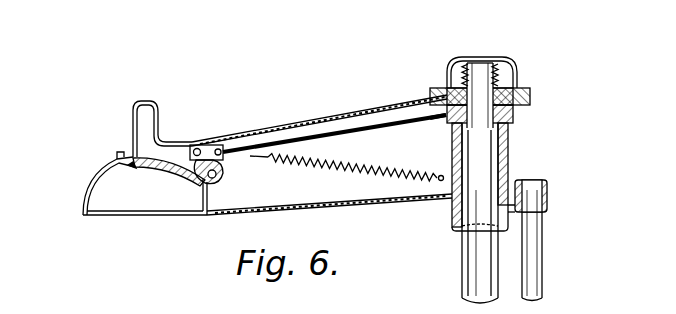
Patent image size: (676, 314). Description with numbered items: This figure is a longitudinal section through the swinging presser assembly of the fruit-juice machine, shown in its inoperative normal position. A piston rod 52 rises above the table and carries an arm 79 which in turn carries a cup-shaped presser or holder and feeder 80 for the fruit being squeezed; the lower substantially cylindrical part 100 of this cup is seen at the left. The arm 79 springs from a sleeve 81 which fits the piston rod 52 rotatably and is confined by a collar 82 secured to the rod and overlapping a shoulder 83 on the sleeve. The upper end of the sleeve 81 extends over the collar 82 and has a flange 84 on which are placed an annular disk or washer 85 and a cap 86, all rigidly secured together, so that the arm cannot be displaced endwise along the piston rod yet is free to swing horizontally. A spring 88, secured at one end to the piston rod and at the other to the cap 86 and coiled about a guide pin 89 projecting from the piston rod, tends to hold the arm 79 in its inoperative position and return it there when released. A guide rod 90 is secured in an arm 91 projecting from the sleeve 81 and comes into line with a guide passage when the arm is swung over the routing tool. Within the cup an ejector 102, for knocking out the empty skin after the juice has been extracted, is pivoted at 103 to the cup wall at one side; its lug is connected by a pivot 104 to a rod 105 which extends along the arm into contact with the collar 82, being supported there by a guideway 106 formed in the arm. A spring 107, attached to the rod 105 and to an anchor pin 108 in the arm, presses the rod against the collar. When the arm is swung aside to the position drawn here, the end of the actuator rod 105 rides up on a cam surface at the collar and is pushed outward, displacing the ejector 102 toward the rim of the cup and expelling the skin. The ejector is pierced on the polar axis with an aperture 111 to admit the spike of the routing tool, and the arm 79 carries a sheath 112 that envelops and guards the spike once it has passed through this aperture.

The piston rod 52 is at (480, 268).
The arm 79 is at (306, 120).
The cup-shaped presser or holder and feeder 80 is at (92, 178).
The sleeve 81 is at (455, 212).
The collar 82 is at (518, 119).
The shoulder 83 is at (452, 138).
The flange 84 is at (530, 104).
The annular disk or washer 85 is at (523, 96).
The cap 86 is at (514, 72).
The spring 88 is at (499, 62).
The guide pin 89 is at (477, 66).
The guide rod 90 is at (541, 248).
The arm 91 is at (548, 197).
The lower substantially cylindrical part 100 is at (100, 217).
The ejector 102 is at (164, 170).
The pivot 103 is at (216, 172).
The pivot 104 is at (197, 147).
The rod 105 is at (248, 136).
The guideway 106 is at (430, 123).
The spring 107 is at (342, 174).
The anchor pin 108 is at (440, 186).
The aperture 111 is at (139, 168).
The sheath 112 is at (146, 108).